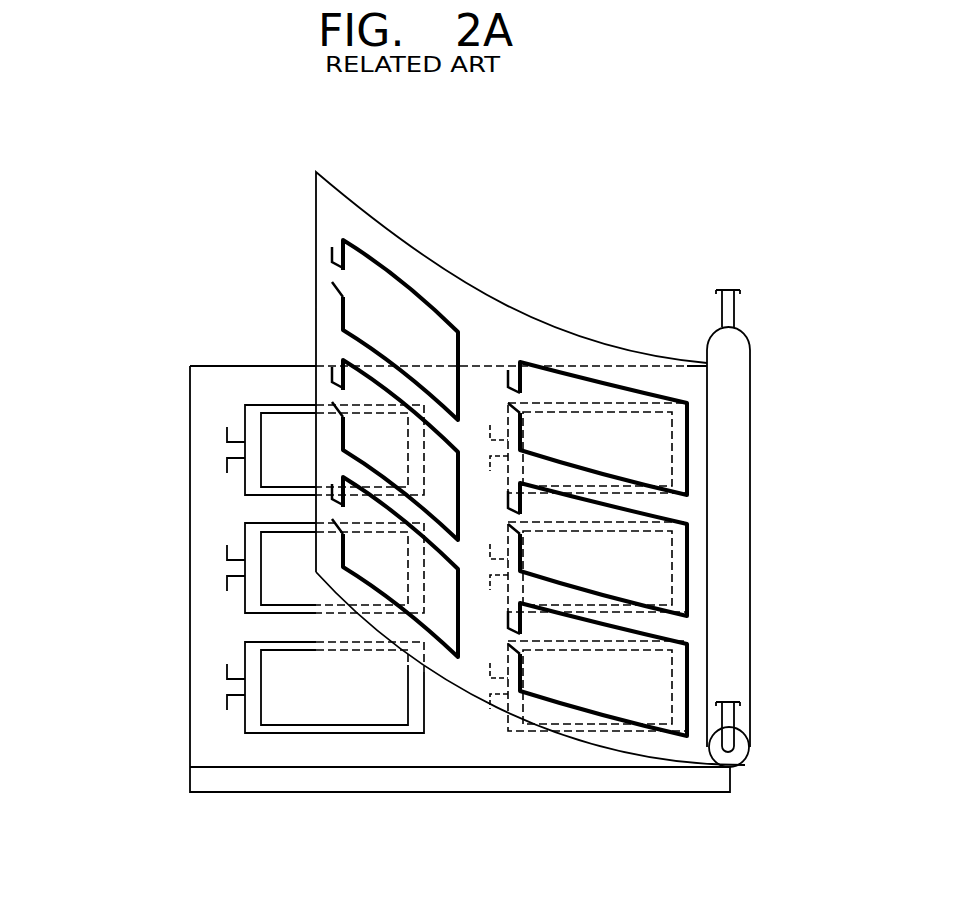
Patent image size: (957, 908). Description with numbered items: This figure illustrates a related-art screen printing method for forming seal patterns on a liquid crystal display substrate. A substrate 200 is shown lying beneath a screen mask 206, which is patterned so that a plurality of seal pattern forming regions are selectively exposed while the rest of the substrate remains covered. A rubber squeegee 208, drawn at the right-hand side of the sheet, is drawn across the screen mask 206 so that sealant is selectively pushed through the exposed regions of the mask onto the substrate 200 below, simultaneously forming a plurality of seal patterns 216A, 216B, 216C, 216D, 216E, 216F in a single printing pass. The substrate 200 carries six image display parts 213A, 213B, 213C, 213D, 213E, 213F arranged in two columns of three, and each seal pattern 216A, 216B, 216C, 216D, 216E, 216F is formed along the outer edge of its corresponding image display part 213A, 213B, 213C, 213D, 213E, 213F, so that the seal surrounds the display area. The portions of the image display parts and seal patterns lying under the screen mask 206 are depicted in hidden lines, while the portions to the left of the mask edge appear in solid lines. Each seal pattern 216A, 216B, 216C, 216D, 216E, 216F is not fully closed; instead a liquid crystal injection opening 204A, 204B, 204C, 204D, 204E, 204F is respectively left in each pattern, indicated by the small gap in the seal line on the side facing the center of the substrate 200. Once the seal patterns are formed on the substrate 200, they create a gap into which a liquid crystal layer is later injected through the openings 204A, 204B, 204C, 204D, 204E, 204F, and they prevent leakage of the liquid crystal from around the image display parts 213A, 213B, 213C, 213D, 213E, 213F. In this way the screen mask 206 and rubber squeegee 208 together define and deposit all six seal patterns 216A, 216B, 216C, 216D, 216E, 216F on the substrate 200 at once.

The substrate 200 is at (713, 781).
The liquid crystal injection opening 204A is at (482, 447).
The liquid crystal injection opening 204B is at (492, 566).
The liquid crystal injection opening 204C is at (492, 685).
The liquid crystal injection opening 204D is at (233, 449).
The liquid crystal injection opening 204E is at (233, 567).
The liquid crystal injection opening 204F is at (233, 687).
The screen mask 206 is at (353, 211).
The rubber squeegee 208 is at (735, 358).
The image display part 213A is at (641, 462).
The image display part 213B is at (641, 582).
The image display part 213C is at (641, 701).
The image display part 213D is at (313, 462).
The image display part 213E is at (313, 581).
The image display part 213F is at (313, 698).
The seal pattern 216A is at (582, 403).
The seal pattern 216B is at (582, 522).
The seal pattern 216C is at (582, 641).
The seal pattern 216D is at (245, 413).
The seal pattern 216E is at (245, 531).
The seal pattern 216F is at (245, 651).